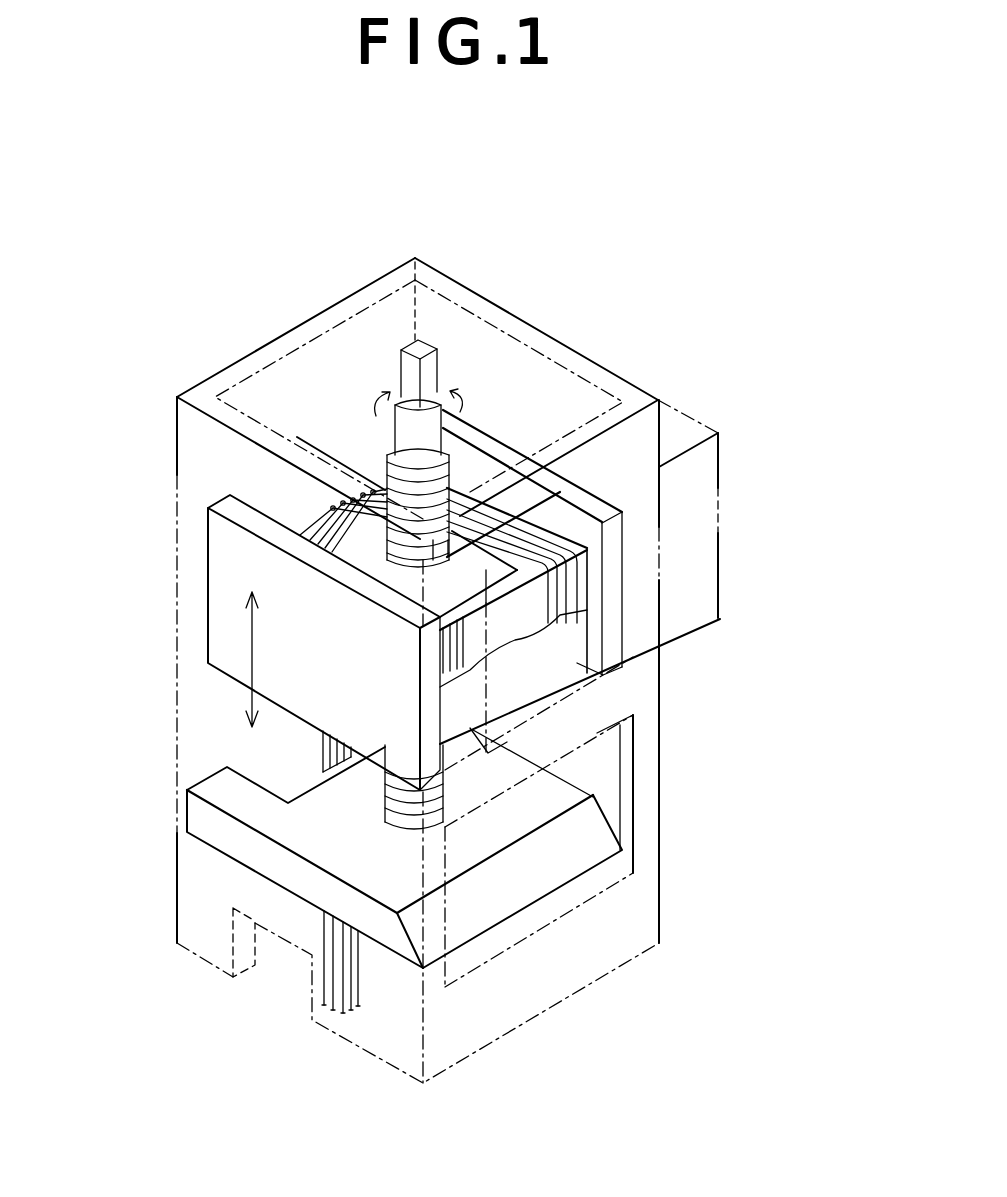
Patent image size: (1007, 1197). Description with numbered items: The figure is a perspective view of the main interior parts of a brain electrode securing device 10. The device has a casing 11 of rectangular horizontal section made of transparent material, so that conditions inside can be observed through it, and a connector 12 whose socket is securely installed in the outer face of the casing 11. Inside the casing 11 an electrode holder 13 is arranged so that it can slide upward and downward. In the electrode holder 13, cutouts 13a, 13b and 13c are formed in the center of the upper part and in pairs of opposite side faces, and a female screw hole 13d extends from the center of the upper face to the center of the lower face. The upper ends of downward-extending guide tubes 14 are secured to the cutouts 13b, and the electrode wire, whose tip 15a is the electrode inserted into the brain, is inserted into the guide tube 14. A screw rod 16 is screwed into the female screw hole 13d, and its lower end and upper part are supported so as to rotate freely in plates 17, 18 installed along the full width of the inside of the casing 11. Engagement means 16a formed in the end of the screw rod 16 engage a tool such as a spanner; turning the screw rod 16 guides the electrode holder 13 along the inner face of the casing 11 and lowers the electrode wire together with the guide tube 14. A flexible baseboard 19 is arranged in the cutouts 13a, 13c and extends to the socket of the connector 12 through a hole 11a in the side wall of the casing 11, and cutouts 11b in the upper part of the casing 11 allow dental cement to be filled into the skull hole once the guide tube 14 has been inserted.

The brain electrode securing device 10 is at (718, 352).
The casing 11 is at (665, 800).
The hole 11a is at (557, 905).
The cutout 11b is at (248, 937).
The connector 12 is at (720, 548).
The electrode holder 13 is at (433, 373).
The cutout 13a is at (360, 585).
The cutouts 13b is at (303, 530).
The cutout 13c is at (530, 667).
The female screw hole 13d is at (545, 518).
The guide tube 14 is at (320, 757).
The tip (electrode) 15a is at (330, 1005).
The screw rod 16 is at (410, 442).
The engagement means 16a is at (508, 440).
The plate 17 is at (290, 828).
The plate 18 is at (345, 325).
The flexible baseboard 19 is at (530, 613).